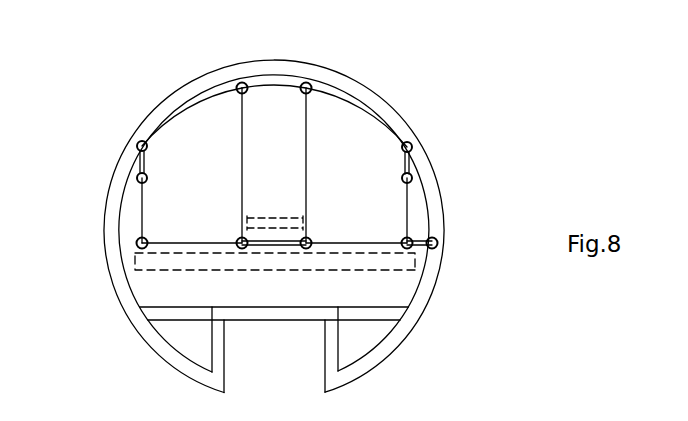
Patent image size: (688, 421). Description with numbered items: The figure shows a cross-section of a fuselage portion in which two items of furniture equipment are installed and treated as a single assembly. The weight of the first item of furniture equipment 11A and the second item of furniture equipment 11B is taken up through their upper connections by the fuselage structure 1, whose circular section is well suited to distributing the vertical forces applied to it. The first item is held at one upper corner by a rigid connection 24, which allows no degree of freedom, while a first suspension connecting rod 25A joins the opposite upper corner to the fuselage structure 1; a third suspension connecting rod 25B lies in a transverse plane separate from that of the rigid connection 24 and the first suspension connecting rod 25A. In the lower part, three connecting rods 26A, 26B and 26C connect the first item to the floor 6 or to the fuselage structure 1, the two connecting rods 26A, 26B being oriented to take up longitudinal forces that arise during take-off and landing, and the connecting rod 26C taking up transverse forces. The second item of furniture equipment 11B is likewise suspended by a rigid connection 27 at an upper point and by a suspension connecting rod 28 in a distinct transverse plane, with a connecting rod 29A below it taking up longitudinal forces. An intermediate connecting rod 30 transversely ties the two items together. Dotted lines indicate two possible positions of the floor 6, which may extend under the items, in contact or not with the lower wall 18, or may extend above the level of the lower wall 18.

The fuselage structure 1 is at (190, 90).
The first item of furniture equipment 11A is at (343, 140).
The second item of furniture equipment 11B is at (188, 147).
The rigid connection 27 is at (240, 84).
The rigid connection 24 is at (346, 47).
The first suspension connecting rod 25A is at (307, 84).
The third suspension connecting rod 25B is at (413, 163).
The suspension connecting rod 28 is at (140, 163).
The connecting rod 29A is at (139, 246).
The connecting rod 26C is at (419, 240).
The lower wall 18 is at (367, 243).
The intermediate connecting rod 30 is at (268, 247).
The floor 6 is at (270, 213).
The connecting rod 26A is at (408, 252).
The connecting rod 26B is at (306, 264).